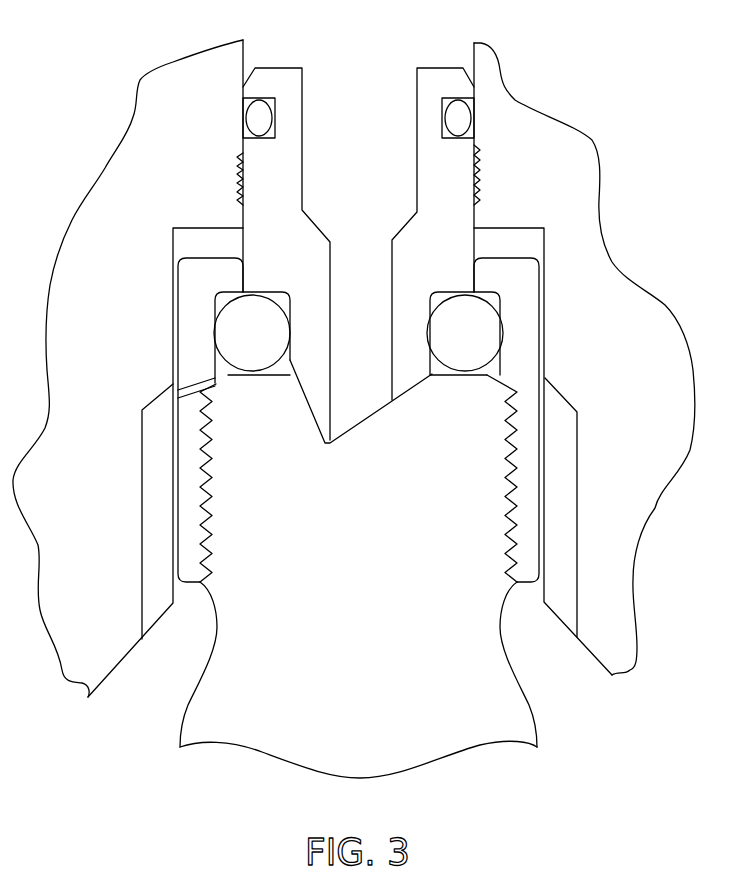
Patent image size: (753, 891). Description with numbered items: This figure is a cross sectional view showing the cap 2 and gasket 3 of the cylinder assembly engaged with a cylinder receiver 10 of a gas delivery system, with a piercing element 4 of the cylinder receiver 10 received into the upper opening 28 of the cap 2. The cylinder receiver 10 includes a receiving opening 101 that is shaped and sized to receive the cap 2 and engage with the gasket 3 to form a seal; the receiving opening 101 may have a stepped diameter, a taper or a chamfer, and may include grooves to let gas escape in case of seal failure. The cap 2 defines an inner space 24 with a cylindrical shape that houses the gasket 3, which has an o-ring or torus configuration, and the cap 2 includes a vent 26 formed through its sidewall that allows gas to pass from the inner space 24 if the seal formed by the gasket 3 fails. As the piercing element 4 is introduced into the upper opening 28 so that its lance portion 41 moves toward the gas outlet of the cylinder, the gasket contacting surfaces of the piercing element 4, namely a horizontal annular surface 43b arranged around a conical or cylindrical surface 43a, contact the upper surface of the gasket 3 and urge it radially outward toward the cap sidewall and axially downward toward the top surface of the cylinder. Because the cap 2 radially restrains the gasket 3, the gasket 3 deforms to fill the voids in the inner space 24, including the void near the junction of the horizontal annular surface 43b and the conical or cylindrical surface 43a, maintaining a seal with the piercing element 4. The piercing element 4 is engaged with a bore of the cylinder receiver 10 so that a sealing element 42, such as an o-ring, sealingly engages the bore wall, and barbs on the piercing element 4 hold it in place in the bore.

The cap 2 is at (528, 285).
The gasket 3 is at (437, 330).
The piercing element 4 is at (437, 75).
The cylinder receiver 10 is at (618, 278).
The inner space 24 is at (220, 368).
The vent 26 is at (183, 388).
The upper opening 28 is at (477, 270).
The lance portion 41 is at (365, 418).
The sealing element 42 is at (450, 118).
The conical or cylindrical surface 43a is at (293, 332).
The horizontal annular surface 43b is at (250, 292).
The receiving opening 101 is at (178, 283).